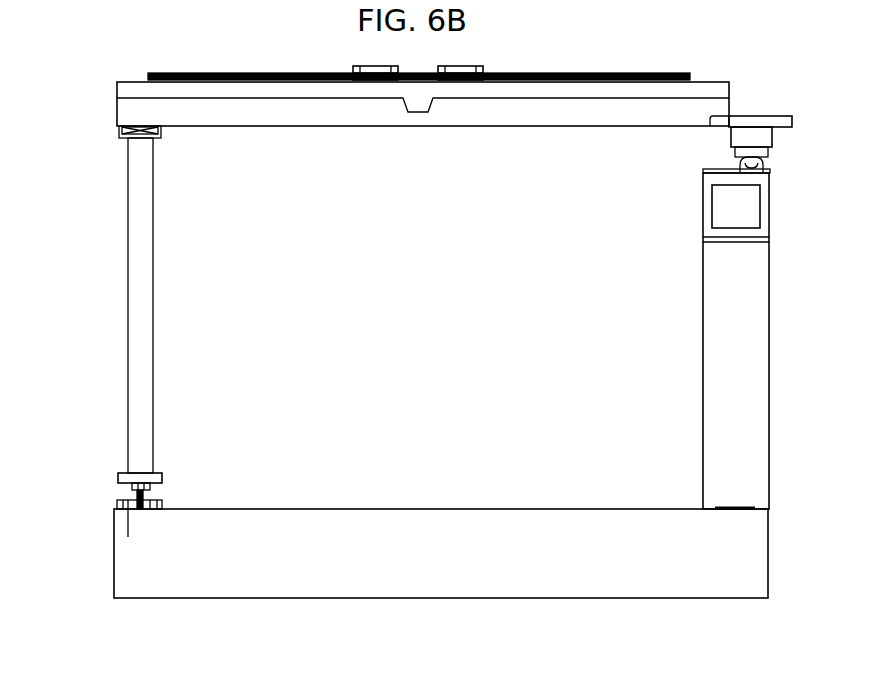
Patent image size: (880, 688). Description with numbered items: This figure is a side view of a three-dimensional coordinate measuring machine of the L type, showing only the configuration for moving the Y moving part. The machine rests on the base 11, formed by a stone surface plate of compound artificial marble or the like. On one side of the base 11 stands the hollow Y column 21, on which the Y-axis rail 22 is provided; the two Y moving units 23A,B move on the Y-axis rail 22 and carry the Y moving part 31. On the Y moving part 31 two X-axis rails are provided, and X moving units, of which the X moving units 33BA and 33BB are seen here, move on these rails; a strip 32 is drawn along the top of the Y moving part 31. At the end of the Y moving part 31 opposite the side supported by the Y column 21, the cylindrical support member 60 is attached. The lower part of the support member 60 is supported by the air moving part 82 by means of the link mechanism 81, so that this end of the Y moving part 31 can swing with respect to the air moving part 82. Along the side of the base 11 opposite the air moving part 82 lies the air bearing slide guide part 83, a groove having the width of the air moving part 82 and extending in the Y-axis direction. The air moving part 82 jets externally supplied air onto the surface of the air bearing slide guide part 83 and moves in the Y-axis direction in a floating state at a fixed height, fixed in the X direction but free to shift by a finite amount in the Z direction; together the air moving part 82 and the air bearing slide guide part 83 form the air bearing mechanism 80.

The base 11 is at (132, 567).
The Y column 21 is at (758, 442).
The Y-axis rail 22 is at (750, 172).
The Y moving units 23A,B is at (775, 160).
The Y moving part 31 is at (128, 113).
The strip member 32 is at (208, 72).
The X moving unit 33BB is at (375, 66).
The X moving unit 33BA is at (463, 63).
The support member 60 is at (137, 236).
The air bearing mechanism 80 is at (138, 495).
The link mechanism 81 is at (163, 495).
The air moving part 82 is at (118, 502).
The air bearing slide guide part 83 is at (128, 537).